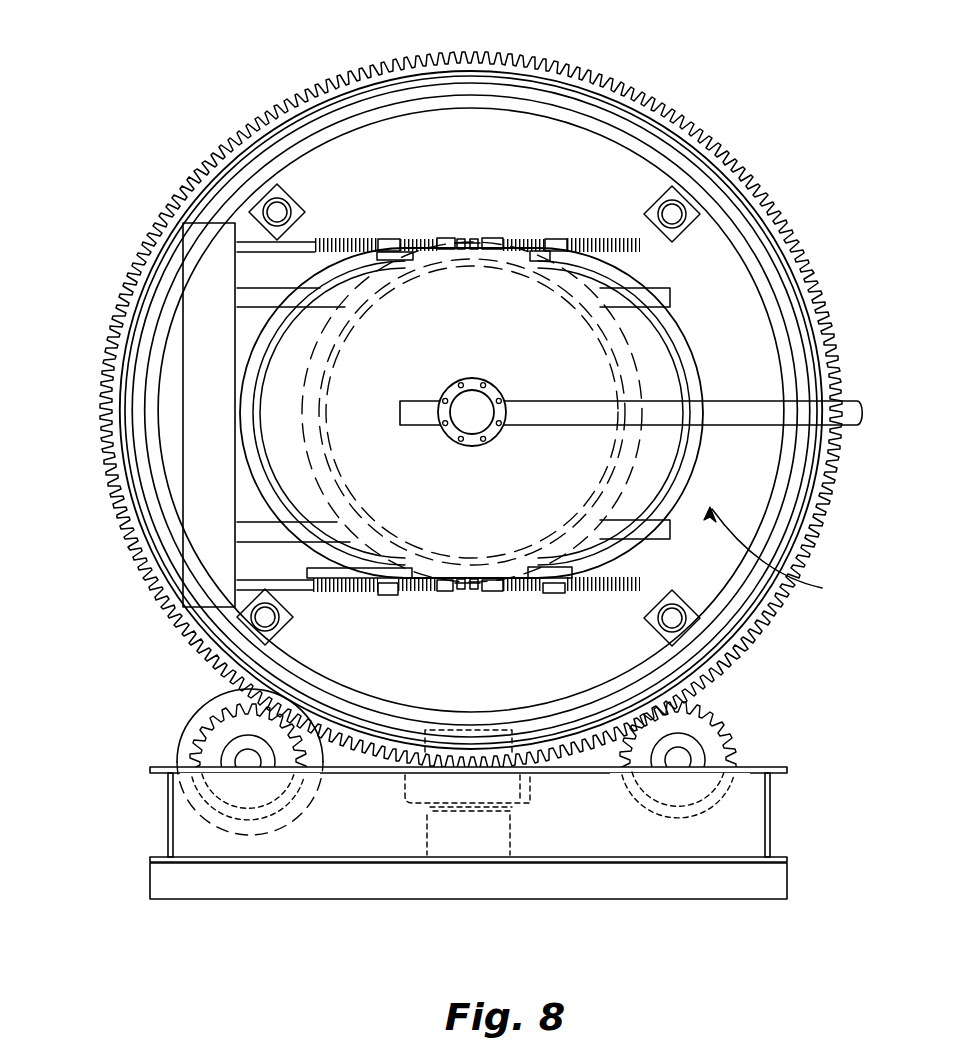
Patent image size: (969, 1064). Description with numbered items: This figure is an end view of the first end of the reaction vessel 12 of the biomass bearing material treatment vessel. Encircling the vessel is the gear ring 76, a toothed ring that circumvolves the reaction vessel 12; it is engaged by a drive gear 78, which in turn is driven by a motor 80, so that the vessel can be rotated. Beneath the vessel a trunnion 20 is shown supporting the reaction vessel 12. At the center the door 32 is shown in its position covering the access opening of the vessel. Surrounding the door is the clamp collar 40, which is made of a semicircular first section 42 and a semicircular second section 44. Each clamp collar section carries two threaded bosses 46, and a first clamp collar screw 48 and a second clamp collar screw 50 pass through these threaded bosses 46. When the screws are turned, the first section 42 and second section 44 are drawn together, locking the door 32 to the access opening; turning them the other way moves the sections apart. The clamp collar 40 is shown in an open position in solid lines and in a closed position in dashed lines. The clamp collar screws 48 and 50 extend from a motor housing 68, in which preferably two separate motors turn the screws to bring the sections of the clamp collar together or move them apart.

The reaction vessel 12 is at (383, 143).
The trunnion 20 is at (723, 740).
The door 32 is at (497, 330).
The clamp collar 40 is at (779, 557).
The first section 42 is at (687, 337).
The second section 44 is at (308, 553).
The threaded bosses 46 is at (494, 238).
The first clamp collar screw 48 is at (600, 593).
The second clamp collar screw 50 is at (338, 240).
The motor housing 68 is at (203, 270).
The gear ring 76 is at (182, 227).
The drive gear 78 is at (197, 816).
The motor 80 is at (187, 722).